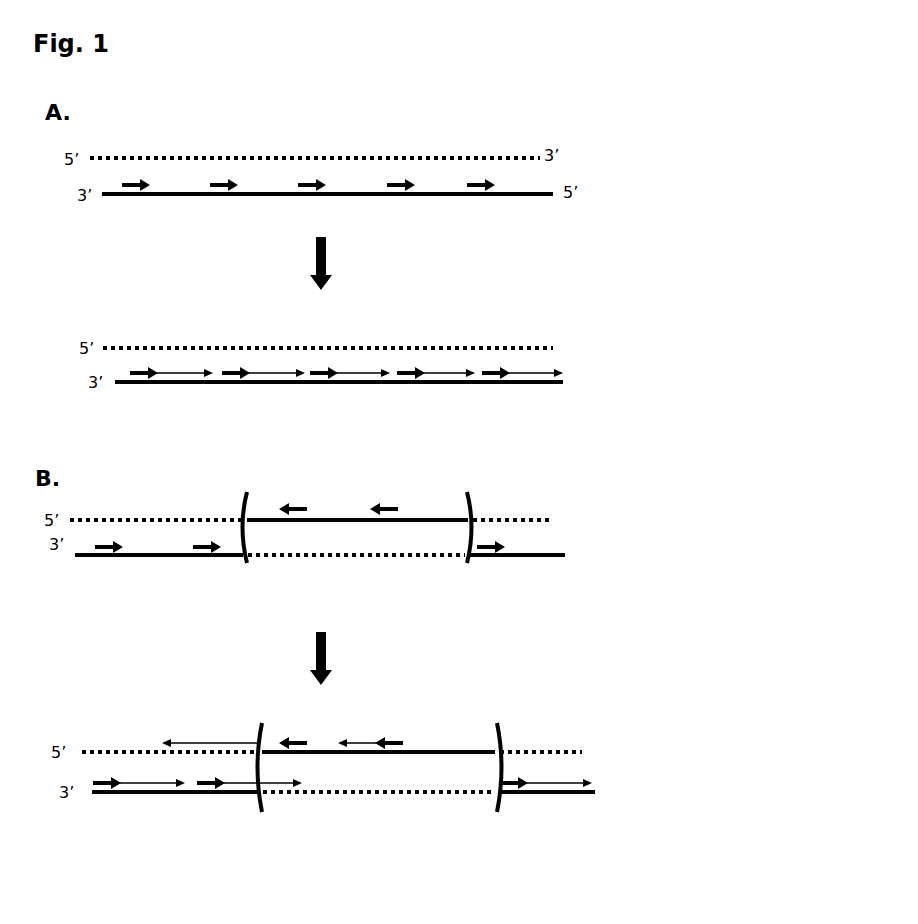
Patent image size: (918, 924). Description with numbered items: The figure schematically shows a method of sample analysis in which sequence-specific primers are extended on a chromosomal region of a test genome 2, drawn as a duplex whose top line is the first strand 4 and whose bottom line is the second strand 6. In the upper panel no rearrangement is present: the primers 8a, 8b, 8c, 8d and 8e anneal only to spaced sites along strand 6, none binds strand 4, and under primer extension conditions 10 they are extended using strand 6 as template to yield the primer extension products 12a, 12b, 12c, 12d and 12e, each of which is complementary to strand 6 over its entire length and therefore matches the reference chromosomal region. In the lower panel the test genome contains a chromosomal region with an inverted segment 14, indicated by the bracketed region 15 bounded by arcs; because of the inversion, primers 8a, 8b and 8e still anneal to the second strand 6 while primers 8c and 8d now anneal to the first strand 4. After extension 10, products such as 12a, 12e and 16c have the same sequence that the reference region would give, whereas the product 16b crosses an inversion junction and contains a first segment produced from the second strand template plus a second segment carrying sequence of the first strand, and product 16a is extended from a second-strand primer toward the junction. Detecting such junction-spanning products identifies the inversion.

The test genome 2 is at (577, 141).
The first strand 4 is at (100, 152).
The second strand 6 is at (112, 198).
The primer 8a is at (127, 178).
The primer 8b is at (215, 178).
The primer 8c is at (303, 178).
The primer 8d is at (394, 178).
The primer 8e is at (474, 178).
The primer extension conditions 10 is at (330, 461).
The primer extension product 12a is at (175, 368).
The primer extension product 12b is at (258, 368).
The primer extension product 12c is at (350, 368).
The primer extension product 12d is at (440, 368).
The primer extension product 12e is at (522, 368).
The inverted segment 14 is at (465, 575).
The chromosomal region containing an inverted segment 15 is at (567, 512).
The primer extension product 16a is at (250, 794).
The primer extension product 16b is at (232, 740).
The primer extension product 16c is at (368, 740).